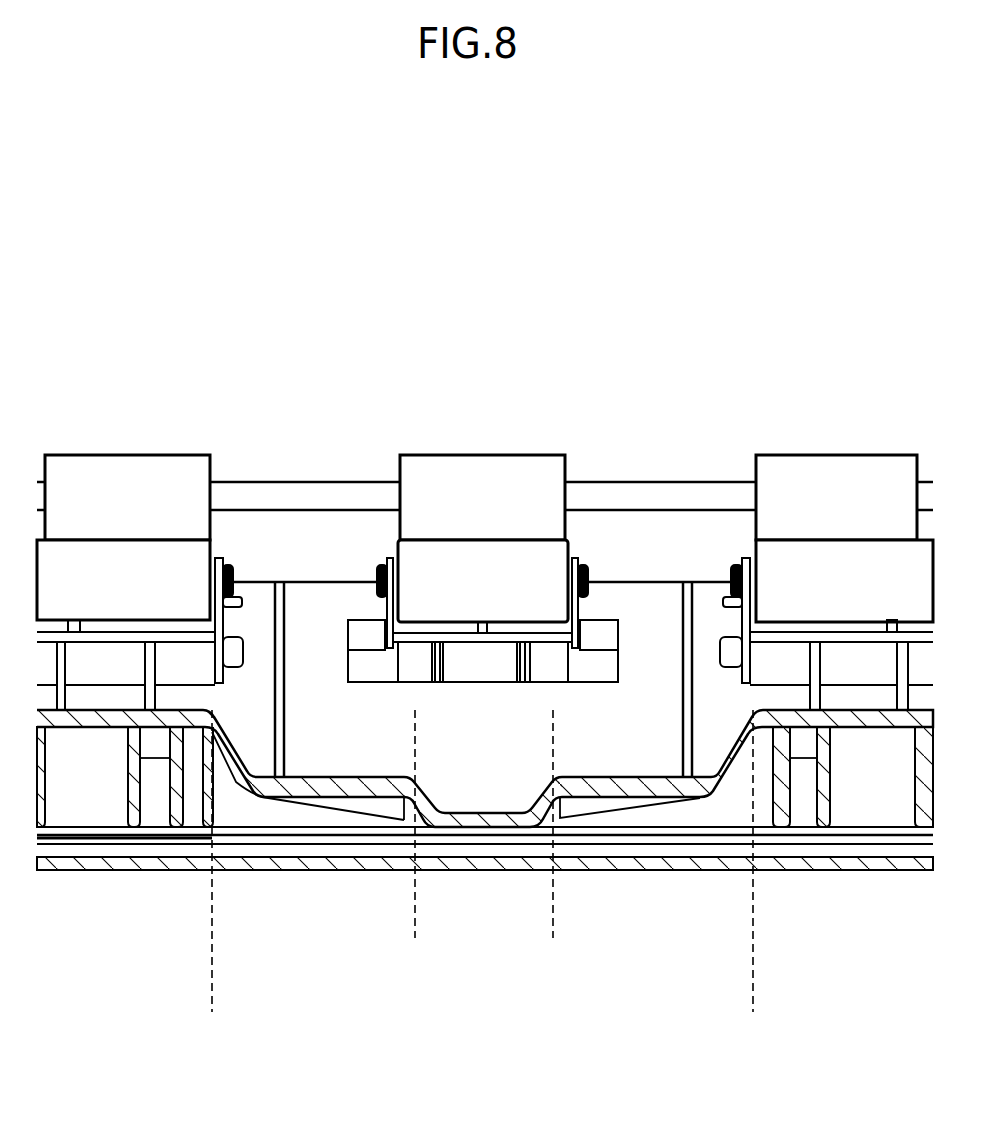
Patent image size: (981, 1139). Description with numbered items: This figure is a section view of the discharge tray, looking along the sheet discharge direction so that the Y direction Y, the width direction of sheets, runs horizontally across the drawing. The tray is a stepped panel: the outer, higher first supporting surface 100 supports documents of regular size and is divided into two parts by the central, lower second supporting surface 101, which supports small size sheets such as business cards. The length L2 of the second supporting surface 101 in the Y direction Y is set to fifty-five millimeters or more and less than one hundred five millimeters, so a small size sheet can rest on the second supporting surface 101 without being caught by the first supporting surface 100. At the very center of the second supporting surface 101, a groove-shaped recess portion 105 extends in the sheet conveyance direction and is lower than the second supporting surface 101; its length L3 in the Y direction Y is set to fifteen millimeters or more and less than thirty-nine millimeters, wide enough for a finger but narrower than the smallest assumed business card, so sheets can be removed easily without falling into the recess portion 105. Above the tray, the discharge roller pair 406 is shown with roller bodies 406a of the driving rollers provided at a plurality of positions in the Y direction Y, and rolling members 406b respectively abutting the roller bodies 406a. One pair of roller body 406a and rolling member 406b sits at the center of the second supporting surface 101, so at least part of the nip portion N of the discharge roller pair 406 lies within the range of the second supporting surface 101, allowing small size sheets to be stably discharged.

The first supporting surface 100 is at (485, 589).
The second supporting surface 101 is at (318, 777).
The recess portion 105 is at (483, 813).
The discharge roller pair 406 is at (494, 447).
The roller body 406a is at (110, 478).
The rolling member 406b is at (79, 558).
The nip portion N is at (542, 540).
The Y direction Y is at (873, 219).
The length L2 is at (753, 993).
The length L3 is at (553, 926).